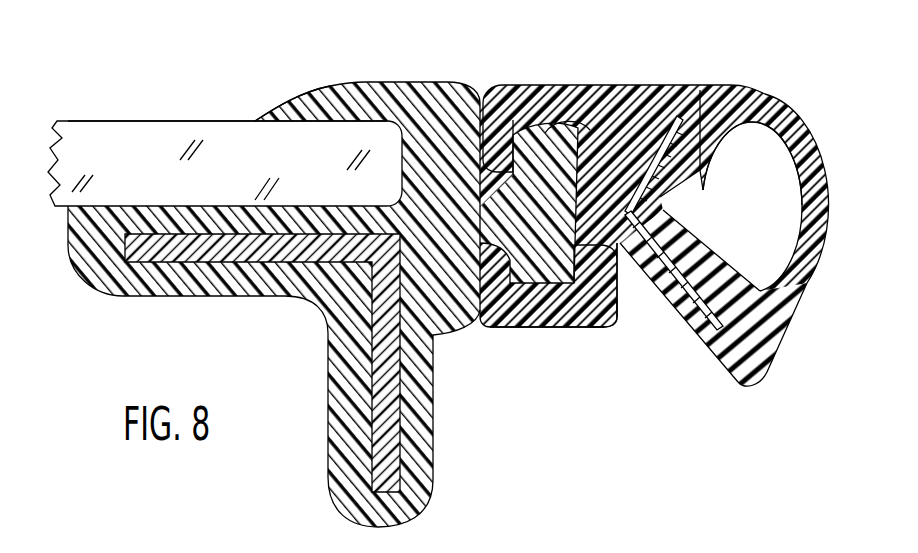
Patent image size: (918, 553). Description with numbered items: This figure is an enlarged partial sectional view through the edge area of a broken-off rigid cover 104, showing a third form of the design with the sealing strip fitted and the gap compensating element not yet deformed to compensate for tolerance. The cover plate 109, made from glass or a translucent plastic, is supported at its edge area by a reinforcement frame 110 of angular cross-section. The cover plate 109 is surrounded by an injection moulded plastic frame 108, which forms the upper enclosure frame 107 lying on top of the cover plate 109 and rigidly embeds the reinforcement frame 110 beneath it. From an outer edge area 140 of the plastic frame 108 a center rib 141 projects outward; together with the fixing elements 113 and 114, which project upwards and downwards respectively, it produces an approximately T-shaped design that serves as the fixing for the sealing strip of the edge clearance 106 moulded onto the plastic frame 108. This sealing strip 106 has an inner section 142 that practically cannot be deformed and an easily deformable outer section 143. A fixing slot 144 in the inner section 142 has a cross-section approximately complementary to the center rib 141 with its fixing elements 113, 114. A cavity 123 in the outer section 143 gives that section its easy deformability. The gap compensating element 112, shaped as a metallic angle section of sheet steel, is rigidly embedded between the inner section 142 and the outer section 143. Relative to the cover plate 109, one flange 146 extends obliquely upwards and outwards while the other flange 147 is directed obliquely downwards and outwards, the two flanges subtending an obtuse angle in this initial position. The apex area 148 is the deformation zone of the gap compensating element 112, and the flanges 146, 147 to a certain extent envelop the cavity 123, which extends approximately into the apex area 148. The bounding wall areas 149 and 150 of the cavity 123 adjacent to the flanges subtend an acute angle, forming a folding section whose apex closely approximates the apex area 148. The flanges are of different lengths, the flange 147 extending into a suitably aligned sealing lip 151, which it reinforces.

The rigid cover 104 is at (175, 122).
The cover plate 109 is at (100, 135).
The upper enclosure frame 107 is at (300, 92).
The plastic frame 108 is at (380, 81).
The reinforcement frame 110 is at (390, 427).
The center rib 141 is at (505, 103).
The fixing element 113 is at (545, 135).
The fixing slot 144 is at (617, 100).
The gap compensating element 112 is at (650, 85).
The outer section 143 is at (703, 87).
The sealing strip of the edge clearance 106 is at (747, 93).
The cavity 123 is at (777, 262).
The flange 146 is at (692, 125).
The bounding wall area 149 is at (657, 193).
The bounding wall area 150 is at (670, 220).
The flange 147 is at (697, 288).
The sealing lip 151 is at (734, 385).
The outer edge area 140 is at (504, 327).
The fixing element 114 is at (557, 327).
The inner section 142 is at (610, 327).
The apex area 148 is at (618, 293).